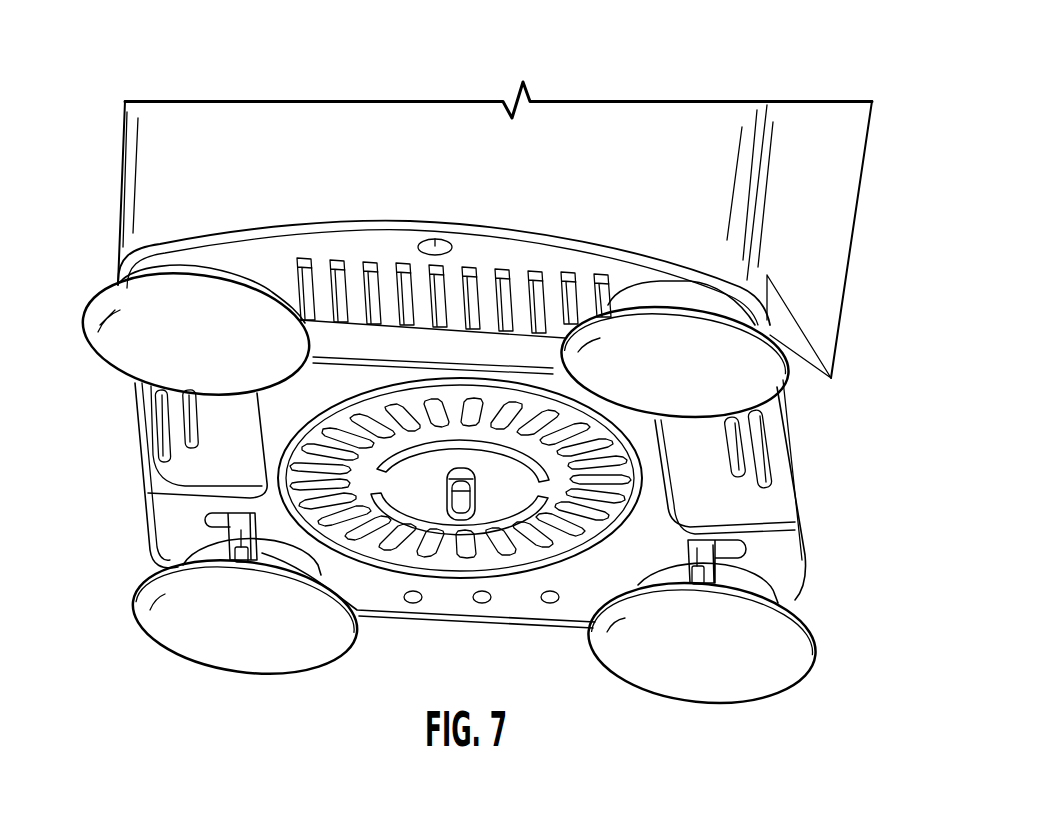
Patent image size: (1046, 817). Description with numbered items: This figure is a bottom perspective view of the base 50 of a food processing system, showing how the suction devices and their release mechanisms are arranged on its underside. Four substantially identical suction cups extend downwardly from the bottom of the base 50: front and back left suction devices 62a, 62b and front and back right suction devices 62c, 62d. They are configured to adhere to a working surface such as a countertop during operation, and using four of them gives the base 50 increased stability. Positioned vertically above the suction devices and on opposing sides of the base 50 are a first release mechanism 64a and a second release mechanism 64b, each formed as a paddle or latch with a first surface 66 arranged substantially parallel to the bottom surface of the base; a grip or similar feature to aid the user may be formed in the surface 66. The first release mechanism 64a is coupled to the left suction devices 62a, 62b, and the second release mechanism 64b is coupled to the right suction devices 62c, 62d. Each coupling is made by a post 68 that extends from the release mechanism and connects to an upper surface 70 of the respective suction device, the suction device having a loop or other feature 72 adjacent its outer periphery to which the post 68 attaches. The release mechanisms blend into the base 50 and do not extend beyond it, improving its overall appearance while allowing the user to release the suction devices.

The base 50 is at (875, 156).
The front left suction device 62a is at (165, 328).
The back left suction device 62b is at (210, 590).
The front right suction device 62c is at (742, 360).
The back right suction device 62d is at (718, 662).
The first release mechanism 64a is at (124, 403).
The second release mechanism 64b is at (798, 436).
The first surface 66 is at (175, 461).
The post 68 is at (230, 523).
The upper surface 70 is at (160, 570).
The loop 72 is at (247, 548).